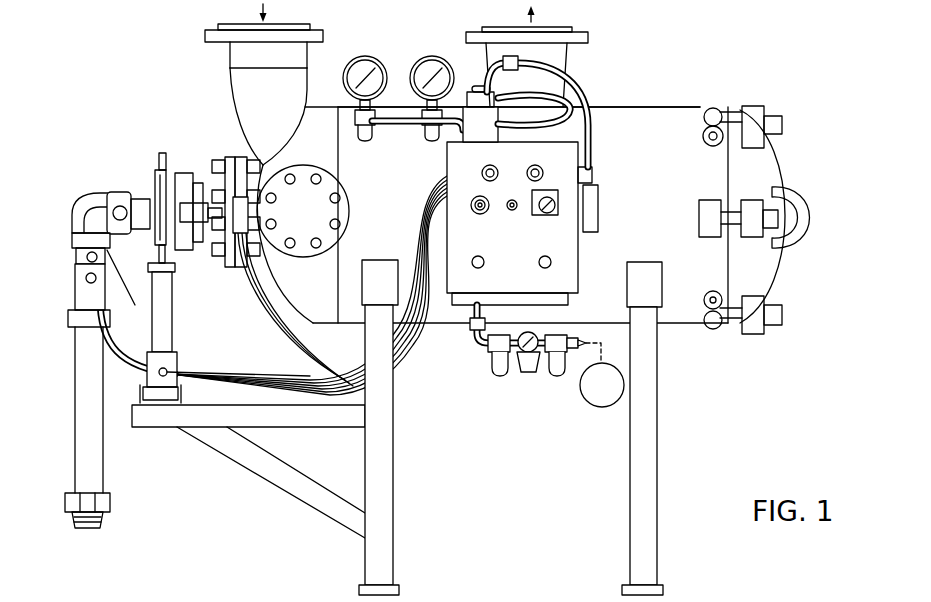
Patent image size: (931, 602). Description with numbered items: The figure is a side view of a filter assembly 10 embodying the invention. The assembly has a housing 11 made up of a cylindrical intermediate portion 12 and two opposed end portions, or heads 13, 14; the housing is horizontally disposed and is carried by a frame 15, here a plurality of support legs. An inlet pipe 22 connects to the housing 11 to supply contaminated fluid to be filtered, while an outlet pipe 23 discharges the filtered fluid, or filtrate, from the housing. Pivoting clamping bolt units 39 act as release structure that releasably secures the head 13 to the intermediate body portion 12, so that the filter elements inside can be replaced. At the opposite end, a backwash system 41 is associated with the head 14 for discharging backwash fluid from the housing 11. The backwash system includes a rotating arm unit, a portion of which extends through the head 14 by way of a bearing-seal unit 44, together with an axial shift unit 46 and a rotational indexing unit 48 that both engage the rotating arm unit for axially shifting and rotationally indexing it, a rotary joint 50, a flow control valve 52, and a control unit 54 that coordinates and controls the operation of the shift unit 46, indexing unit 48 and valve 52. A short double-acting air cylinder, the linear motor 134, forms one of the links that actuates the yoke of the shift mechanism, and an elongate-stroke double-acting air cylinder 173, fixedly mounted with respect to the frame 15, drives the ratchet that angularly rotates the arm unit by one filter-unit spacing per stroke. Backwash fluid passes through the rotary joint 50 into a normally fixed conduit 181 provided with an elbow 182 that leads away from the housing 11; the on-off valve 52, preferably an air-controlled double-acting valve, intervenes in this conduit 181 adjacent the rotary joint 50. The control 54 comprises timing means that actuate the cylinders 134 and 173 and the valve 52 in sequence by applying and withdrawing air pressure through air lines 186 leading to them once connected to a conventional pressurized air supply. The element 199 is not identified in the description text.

The filter assembly 10 is at (424, 299).
The housing 11 is at (516, 184).
The cylindrical intermediate portion 12 is at (652, 118).
The head 13 is at (782, 268).
The head 14 is at (288, 298).
The frame 15 is at (397, 427).
The inlet pipe 22 is at (236, 53).
The outlet pipe 23 is at (566, 56).
The pivoting clamping bolt units 39 is at (743, 333).
The backwash system 41 is at (202, 177).
The bearing-seal unit 44 is at (261, 191).
The axial shift unit 46 is at (183, 183).
The rotational indexing unit 48 is at (136, 180).
The rotary joint 50 is at (119, 189).
The flow control valve 52 is at (72, 389).
The control unit 54 is at (542, 195).
The linear motor 134 is at (243, 212).
The linear motor 173 is at (165, 292).
The conduit 181 is at (60, 234).
The elbow 182 is at (87, 210).
The air lines 186 is at (170, 314).
The cover flange 199 is at (338, 183).